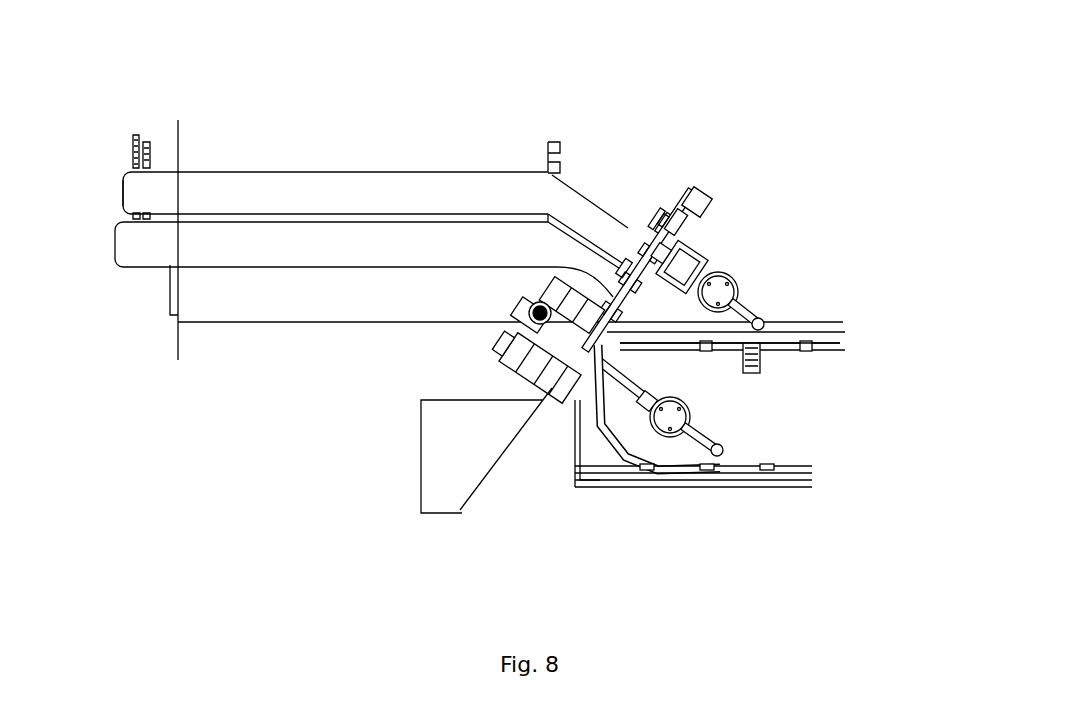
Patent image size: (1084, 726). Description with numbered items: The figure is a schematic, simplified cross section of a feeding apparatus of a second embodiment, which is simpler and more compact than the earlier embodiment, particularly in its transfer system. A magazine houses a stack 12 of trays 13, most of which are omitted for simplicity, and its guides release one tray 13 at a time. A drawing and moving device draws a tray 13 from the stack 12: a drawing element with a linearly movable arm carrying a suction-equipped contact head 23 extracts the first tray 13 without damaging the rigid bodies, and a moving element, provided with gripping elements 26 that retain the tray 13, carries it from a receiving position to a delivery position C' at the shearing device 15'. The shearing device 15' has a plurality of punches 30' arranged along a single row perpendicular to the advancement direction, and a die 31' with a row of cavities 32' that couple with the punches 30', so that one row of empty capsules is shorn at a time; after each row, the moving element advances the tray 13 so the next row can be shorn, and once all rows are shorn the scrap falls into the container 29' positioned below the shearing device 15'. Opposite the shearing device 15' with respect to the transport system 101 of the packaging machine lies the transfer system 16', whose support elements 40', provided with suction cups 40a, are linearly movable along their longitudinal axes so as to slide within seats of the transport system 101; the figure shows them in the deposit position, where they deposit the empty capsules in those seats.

The stack 12 is at (347, 155).
The tray 13 is at (547, 157).
The gripping elements 26 is at (695, 192).
The contact head 23 is at (712, 243).
The transport system 101 is at (842, 350).
The punches 30' is at (444, 330).
The delivery position C' is at (470, 362).
The shearing device 15' is at (468, 419).
The container 29' is at (467, 492).
The cavities 32' is at (566, 506).
The die 31' is at (605, 463).
The support elements 40' is at (686, 482).
The transfer system 16' is at (693, 489).
The suction cups 40a is at (655, 362).